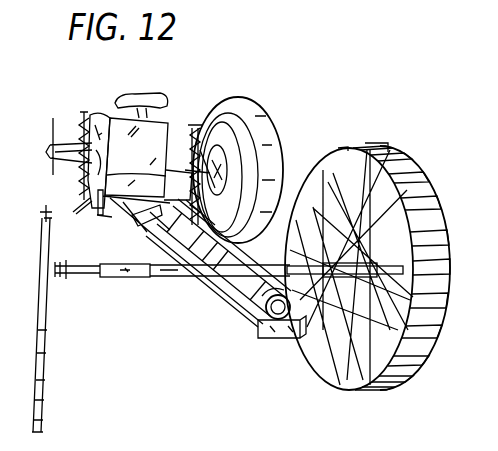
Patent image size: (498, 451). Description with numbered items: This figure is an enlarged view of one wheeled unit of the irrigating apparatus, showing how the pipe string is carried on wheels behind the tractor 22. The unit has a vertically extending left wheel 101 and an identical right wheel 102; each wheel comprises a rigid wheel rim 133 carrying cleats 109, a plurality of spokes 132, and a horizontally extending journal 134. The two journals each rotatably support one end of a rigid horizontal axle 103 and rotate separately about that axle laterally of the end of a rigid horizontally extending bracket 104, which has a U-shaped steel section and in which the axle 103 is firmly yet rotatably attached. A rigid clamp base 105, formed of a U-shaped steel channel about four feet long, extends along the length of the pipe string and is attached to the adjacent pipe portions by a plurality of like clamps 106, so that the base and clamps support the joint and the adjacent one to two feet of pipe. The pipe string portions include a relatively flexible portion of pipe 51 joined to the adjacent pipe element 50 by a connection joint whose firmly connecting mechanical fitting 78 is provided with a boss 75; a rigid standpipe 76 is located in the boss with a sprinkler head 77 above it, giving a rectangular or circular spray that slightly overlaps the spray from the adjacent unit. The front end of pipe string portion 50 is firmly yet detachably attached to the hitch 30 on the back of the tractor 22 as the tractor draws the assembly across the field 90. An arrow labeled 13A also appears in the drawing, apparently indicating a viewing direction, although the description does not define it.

The tractor 22 is at (110, 117).
The front wheel 13A is at (197, 92).
The sprinkler head 77 is at (227, 165).
The standpipe 76 is at (235, 212).
The boss 75 is at (233, 212).
The mechanical fitting 78 is at (220, 227).
The right wheel 102 is at (478, 132).
The spokes 132 is at (362, 152).
The cleats 109 is at (405, 165).
The wheel rim 133 is at (420, 178).
The journal 134 is at (415, 186).
The hitch 30 is at (126, 235).
The pipe string portion 50 is at (174, 270).
The clamps 106 is at (243, 306).
The flexible portion of pipe 51 is at (215, 303).
The clamp base 105 is at (268, 339).
The bracket 104 is at (142, 278).
The axle 103 is at (96, 275).
The left wheel 101 is at (47, 418).
The field 90 is at (469, 446).